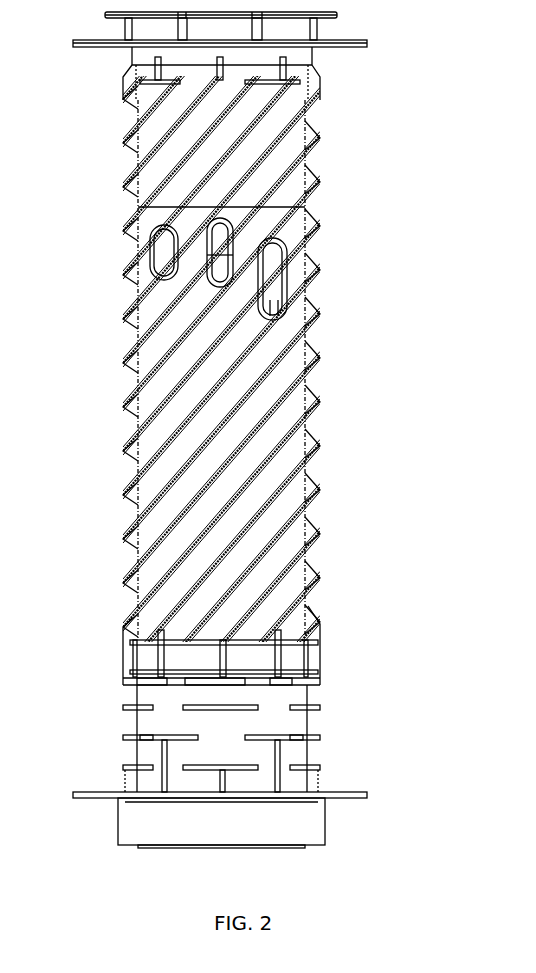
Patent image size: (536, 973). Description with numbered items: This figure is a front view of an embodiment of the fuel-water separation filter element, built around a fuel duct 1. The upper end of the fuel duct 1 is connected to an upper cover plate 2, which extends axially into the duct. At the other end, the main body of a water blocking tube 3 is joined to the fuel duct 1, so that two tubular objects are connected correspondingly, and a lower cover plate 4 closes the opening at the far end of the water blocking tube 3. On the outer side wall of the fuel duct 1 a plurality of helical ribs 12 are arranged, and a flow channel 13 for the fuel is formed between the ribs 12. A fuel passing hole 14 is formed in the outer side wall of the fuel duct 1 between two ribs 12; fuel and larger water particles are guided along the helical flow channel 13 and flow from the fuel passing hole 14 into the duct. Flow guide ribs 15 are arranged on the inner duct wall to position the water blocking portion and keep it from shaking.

The fuel duct 1 is at (245, 425).
The upper cover plate 2 is at (323, 40).
The water blocking tube 3 is at (334, 715).
The lower cover plate 4 is at (333, 796).
The rib 12 is at (276, 406).
The flow channel 13 is at (249, 425).
The fuel passing hole 14 is at (281, 304).
The flow guide rib 15 is at (290, 246).